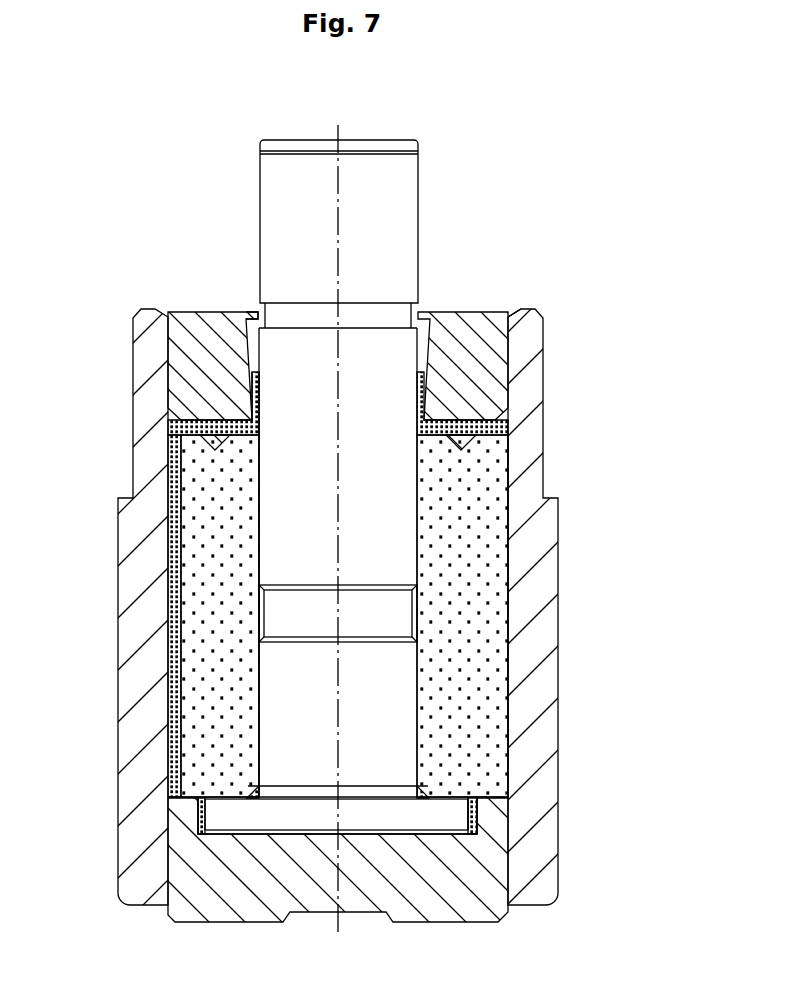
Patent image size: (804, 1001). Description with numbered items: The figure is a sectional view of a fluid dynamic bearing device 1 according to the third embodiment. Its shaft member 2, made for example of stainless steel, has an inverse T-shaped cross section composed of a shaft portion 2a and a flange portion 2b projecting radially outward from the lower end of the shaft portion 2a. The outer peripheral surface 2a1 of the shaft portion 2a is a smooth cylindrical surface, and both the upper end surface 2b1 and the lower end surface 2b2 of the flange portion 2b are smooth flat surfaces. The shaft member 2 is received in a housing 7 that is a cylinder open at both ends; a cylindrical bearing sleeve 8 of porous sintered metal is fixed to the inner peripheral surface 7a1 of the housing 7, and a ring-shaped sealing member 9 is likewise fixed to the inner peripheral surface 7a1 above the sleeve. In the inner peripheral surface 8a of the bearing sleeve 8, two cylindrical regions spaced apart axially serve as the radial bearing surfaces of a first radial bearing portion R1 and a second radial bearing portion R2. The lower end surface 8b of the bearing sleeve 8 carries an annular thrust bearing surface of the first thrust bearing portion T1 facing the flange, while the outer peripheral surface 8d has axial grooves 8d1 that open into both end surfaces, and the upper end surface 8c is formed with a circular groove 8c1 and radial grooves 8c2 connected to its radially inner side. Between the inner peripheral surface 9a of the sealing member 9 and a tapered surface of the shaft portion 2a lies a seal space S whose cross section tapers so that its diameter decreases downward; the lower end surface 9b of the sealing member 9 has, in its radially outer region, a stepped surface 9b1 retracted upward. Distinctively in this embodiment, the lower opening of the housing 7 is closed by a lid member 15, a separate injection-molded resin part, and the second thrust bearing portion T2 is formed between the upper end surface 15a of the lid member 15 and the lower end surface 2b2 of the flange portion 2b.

The fluid dynamic bearing device 1 is at (617, 193).
The shaft member 2 is at (427, 192).
The shaft portion 2a is at (407, 221).
The outer peripheral surface 2a1 is at (427, 330).
The seal space S is at (427, 333).
The housing 7 is at (548, 690).
The inner peripheral surface 7a1 is at (505, 350).
The bearing sleeve 8 is at (477, 617).
The inner peripheral surface 8a is at (260, 560).
The lower end surface 8b is at (232, 800).
The upper end surface 8c is at (250, 437).
The circular groove 8c1 is at (213, 448).
The radial grooves 8c2 is at (246, 430).
The outer peripheral surface 8d is at (505, 560).
The axial grooves 8d1 is at (176, 640).
The sealing member 9 is at (200, 330).
The inner peripheral surface 9a is at (251, 322).
The lower end surface 9b is at (443, 440).
The stepped surface 9b1 is at (470, 437).
The first radial bearing portion R1 is at (258, 513).
The second radial bearing portion R2 is at (258, 720).
The first thrust bearing portion T1 is at (440, 792).
The second thrust bearing portion T2 is at (436, 836).
The flange portion 2b is at (405, 820).
The upper end surface 2b1 is at (448, 785).
The lower end surface 2b2 is at (457, 833).
The lid member 15 is at (363, 875).
The upper end surface 15a is at (272, 826).